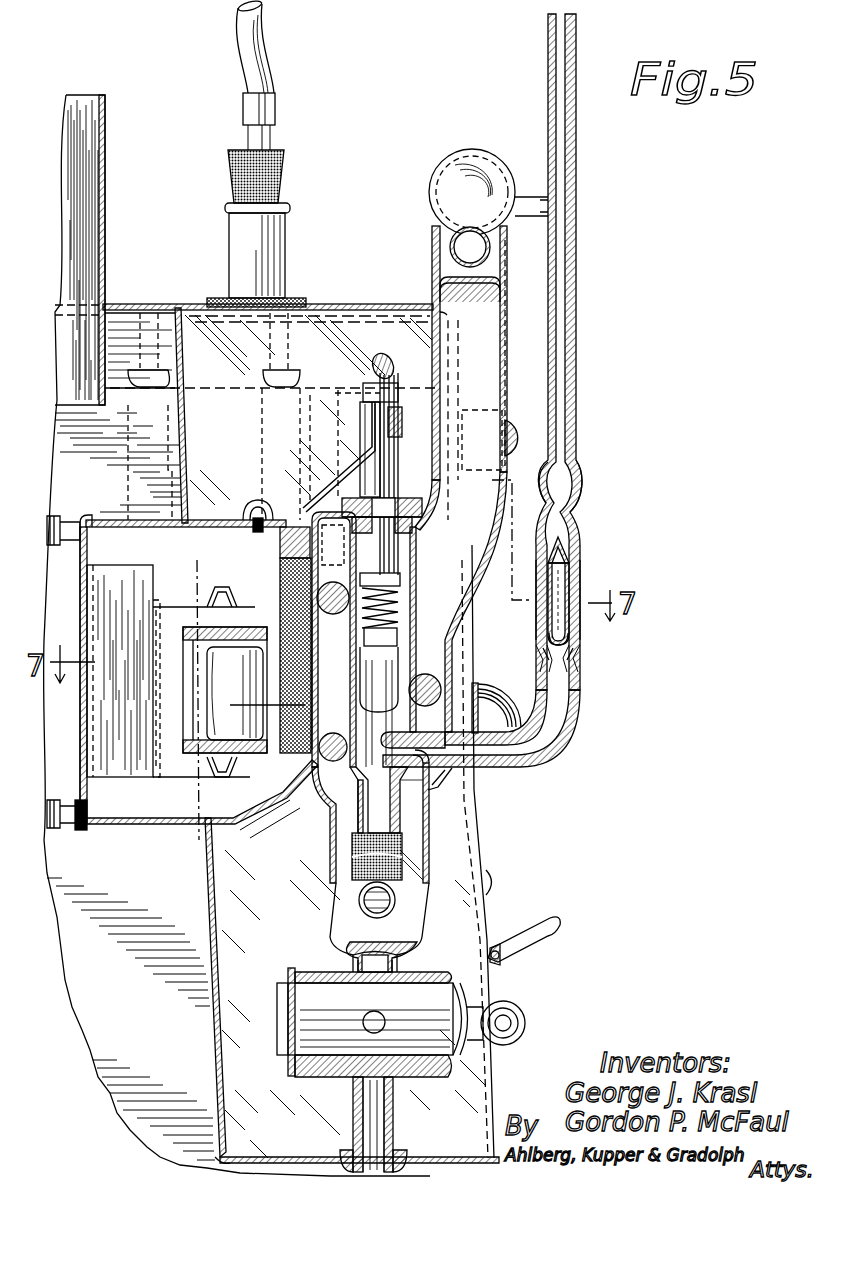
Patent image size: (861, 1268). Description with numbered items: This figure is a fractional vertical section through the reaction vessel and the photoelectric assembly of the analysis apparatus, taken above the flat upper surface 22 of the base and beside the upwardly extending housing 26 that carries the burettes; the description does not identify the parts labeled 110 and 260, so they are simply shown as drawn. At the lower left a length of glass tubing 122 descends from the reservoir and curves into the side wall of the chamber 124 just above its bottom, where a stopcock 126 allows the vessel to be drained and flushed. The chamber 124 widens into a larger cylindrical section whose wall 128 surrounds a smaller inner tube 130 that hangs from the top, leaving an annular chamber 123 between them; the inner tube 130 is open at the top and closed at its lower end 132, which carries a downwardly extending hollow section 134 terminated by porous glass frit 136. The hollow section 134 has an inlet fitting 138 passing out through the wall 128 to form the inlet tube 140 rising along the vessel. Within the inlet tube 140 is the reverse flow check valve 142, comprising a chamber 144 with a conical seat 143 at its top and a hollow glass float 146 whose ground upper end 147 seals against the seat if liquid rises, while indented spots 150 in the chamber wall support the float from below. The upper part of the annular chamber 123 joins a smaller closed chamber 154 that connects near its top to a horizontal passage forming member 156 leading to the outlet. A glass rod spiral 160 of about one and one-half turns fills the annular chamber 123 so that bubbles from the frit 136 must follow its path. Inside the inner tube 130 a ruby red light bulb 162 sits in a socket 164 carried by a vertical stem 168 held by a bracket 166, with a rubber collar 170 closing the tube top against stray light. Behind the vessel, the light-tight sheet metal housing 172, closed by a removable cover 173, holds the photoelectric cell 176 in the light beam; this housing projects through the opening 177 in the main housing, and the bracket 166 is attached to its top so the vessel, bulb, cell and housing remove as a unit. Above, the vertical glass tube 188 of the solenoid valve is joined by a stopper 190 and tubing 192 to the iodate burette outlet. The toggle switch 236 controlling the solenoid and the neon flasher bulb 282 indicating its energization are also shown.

The flat upper surface 22 is at (436, 1157).
The housing 26 is at (108, 166).
The arm 110 is at (422, 264).
The glass tubing 122 is at (358, 912).
The annular chamber 123 is at (315, 627).
The chamber 124 is at (415, 960).
The stopcock 126 is at (347, 962).
The outer tube wall 128 is at (292, 602).
The inner tube 130 is at (372, 563).
The lower end 132 is at (316, 803).
The hollow section 134 is at (402, 830).
The glass frit 136 is at (402, 856).
The inlet fitting 138 is at (417, 806).
The inlet tube 140 is at (578, 128).
The reverse flow check valve 142 is at (598, 580).
The conical seat 143 is at (580, 505).
The chamber 144 is at (575, 535).
The hollow glass float 146 is at (560, 635).
The upper end 147 is at (560, 548).
The indented spots 150 is at (537, 648).
The smaller chamber 154 is at (433, 334).
The horizontal passage forming member 156 is at (452, 228).
The spiral 160 is at (284, 578).
The ruby red light bulb 162 is at (160, 683).
The socket 164 is at (398, 616).
The bracket 166 is at (356, 458).
The vertical stem 168 is at (400, 540).
The rubber collar 170 is at (422, 513).
The sheet metal housing 172 is at (160, 826).
The removable cover 173 is at (83, 600).
The photoelectric cell 176 is at (310, 693).
The opening 177 is at (187, 514).
The vertical glass tube 188 is at (282, 236).
The stopper 190 is at (288, 163).
The tubing 192 is at (268, 44).
The toggle switch 236 is at (545, 952).
The knob 260 is at (514, 432).
The neon flasher bulb 282 is at (517, 686).